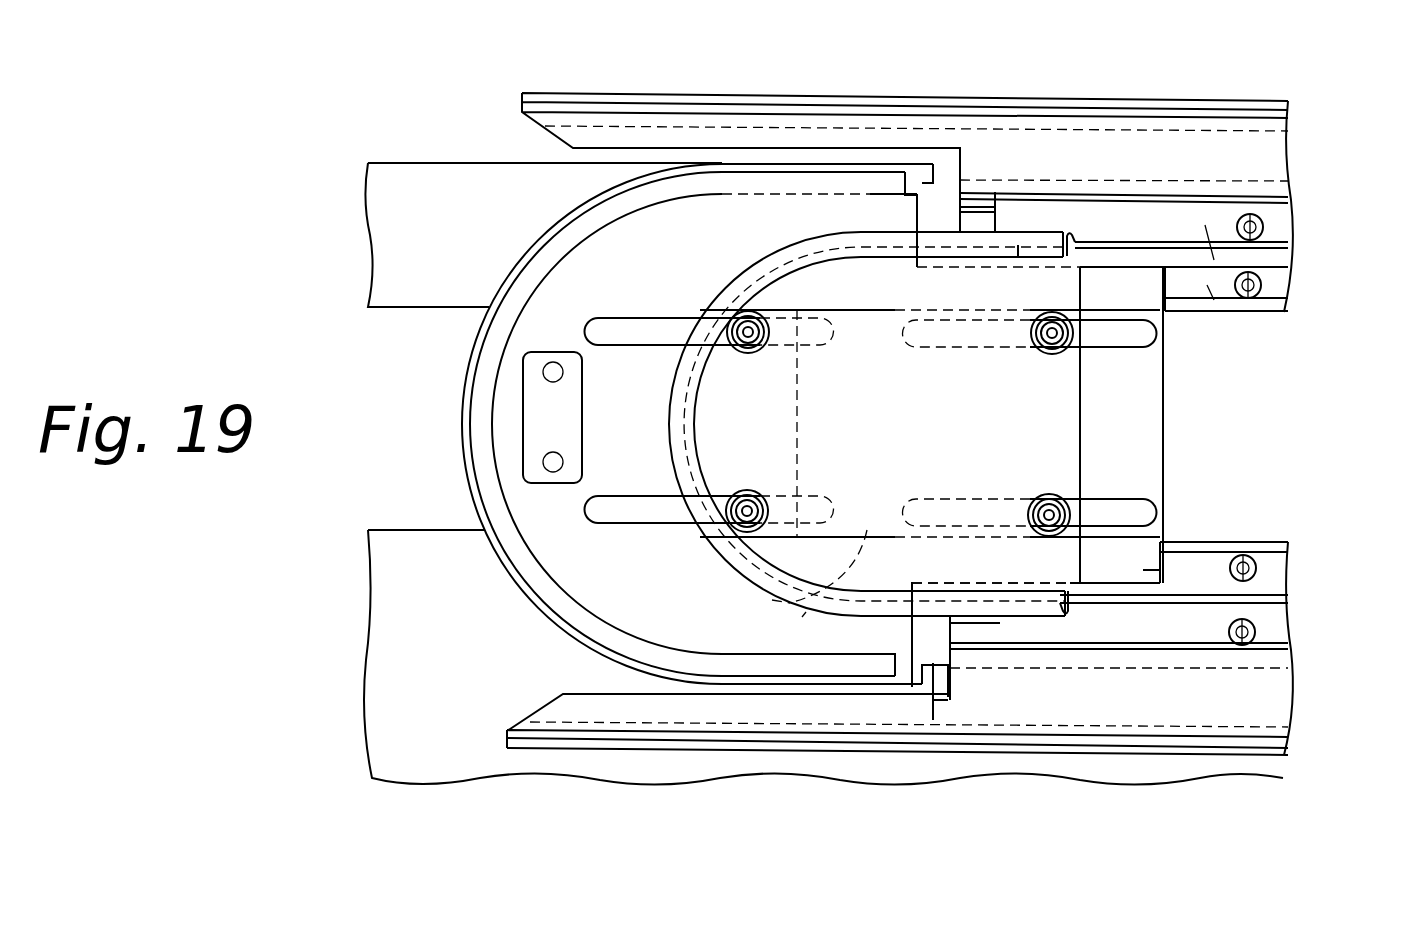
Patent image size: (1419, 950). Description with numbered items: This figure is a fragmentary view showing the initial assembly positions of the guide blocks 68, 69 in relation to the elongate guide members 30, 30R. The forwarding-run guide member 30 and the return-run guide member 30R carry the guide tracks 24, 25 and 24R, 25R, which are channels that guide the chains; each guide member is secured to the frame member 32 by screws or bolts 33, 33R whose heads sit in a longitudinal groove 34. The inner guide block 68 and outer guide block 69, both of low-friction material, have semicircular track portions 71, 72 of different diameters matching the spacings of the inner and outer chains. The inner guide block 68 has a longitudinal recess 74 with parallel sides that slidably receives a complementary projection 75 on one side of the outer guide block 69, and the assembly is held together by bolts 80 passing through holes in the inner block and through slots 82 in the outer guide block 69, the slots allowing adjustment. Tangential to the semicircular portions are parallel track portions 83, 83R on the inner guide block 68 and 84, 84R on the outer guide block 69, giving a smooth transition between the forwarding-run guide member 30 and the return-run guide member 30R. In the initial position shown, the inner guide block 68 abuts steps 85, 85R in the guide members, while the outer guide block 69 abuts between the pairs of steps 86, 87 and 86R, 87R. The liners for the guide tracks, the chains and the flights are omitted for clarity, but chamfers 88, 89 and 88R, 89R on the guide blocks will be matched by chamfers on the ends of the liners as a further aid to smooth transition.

The parallel track portion 84 is at (797, 163).
The chamfer 89 is at (920, 183).
The step 86 is at (958, 212).
The parallel track portion 83 is at (996, 232).
The chamfer 88 is at (1047, 247).
The step 85 is at (1071, 236).
The step 87 is at (1162, 293).
The guide track 25 is at (1247, 162).
The guide track 24 is at (1265, 226).
The screw or bolt 33 is at (1261, 288).
The elongate guide member 30 is at (1266, 315).
The longitudinal groove 34 is at (1207, 285).
The semicircular track portion 72 is at (520, 262).
The semicircular track portion 71 is at (752, 266).
The inner guide block 68 is at (706, 289).
The outer guide block 69 is at (447, 406).
The slot 82 is at (615, 500).
The bolt 80 is at (747, 510).
The frame member 32 is at (445, 620).
The projection 75 is at (772, 600).
The longitudinal recess 74 is at (802, 617).
The elongate guide member 30R is at (1257, 550).
The screw or bolt 33R is at (1252, 575).
The guide track 24R is at (1270, 636).
The guide track 25R is at (1247, 709).
The parallel track portion 84R is at (795, 696).
The chamfer 89R is at (922, 665).
The step 86R is at (948, 630).
The parallel track portion 83R is at (1002, 617).
The chamfer 88R is at (1028, 593).
The step 85R is at (1057, 600).
The step 87R is at (1143, 570).